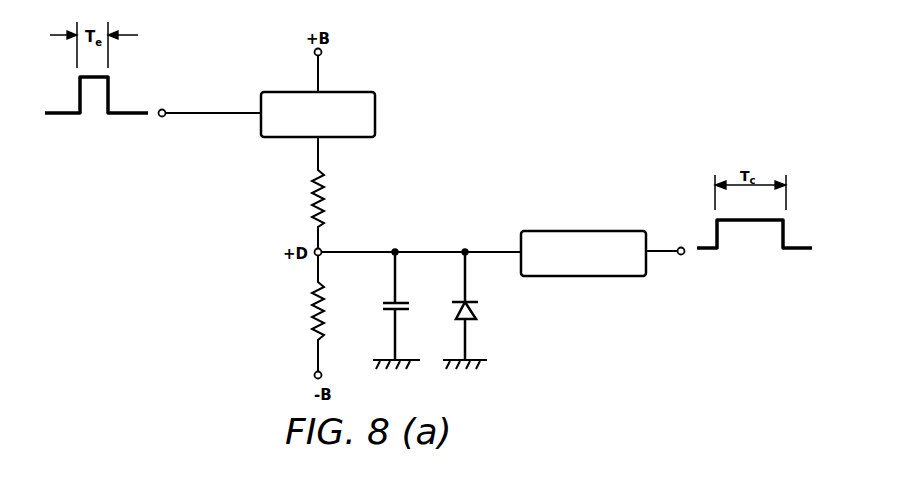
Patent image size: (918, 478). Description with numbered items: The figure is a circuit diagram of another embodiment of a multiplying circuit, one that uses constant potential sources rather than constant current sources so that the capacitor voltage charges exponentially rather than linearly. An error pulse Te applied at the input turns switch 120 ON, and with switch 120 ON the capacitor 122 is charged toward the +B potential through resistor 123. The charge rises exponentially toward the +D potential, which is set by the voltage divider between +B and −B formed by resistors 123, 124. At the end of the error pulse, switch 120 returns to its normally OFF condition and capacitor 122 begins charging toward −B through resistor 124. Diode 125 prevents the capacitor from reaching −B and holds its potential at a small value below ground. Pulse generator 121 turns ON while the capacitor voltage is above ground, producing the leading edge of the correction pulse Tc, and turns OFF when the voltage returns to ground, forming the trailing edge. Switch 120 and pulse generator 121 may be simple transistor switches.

The switch 120 is at (353, 137).
The pulse generator 121 is at (600, 231).
The capacitor 122 is at (405, 301).
The resistor 123 is at (316, 201).
The resistor 124 is at (315, 317).
The diode 125 is at (474, 306).